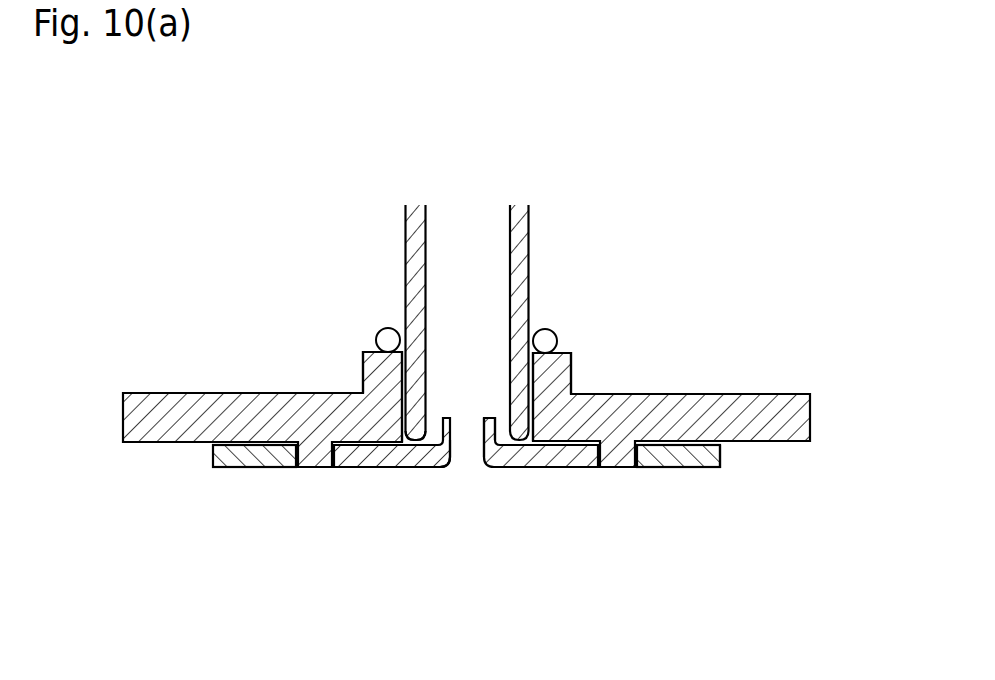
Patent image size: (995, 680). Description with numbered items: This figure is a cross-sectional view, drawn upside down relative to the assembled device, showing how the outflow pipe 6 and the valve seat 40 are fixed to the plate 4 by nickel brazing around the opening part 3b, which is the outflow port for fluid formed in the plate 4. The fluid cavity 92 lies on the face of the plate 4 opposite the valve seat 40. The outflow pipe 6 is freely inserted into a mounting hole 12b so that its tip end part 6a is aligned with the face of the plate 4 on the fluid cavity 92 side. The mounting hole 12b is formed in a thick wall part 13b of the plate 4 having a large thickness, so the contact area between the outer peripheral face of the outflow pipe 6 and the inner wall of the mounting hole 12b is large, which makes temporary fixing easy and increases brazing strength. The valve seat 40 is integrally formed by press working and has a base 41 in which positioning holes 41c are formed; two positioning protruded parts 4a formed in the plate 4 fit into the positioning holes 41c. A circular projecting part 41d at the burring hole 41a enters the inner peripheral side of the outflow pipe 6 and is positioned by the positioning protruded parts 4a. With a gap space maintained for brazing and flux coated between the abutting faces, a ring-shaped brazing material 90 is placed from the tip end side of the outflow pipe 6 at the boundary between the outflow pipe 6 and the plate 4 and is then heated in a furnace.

The plate 4 is at (749, 398).
The positioning protruded part 4a is at (318, 467).
The outflow pipe 6 is at (525, 228).
The tip end part 6a is at (416, 444).
The opening part 3b is at (458, 370).
The mounting hole 12b is at (395, 380).
The thick wall part 13b is at (572, 358).
The brazing material 90 is at (549, 337).
The fluid cavity 92 is at (173, 514).
The valve seat 40 is at (730, 485).
The base 41 is at (538, 463).
The burring hole 41a is at (467, 450).
The positioning hole 41c is at (340, 468).
The circular projecting part 41d is at (482, 426).